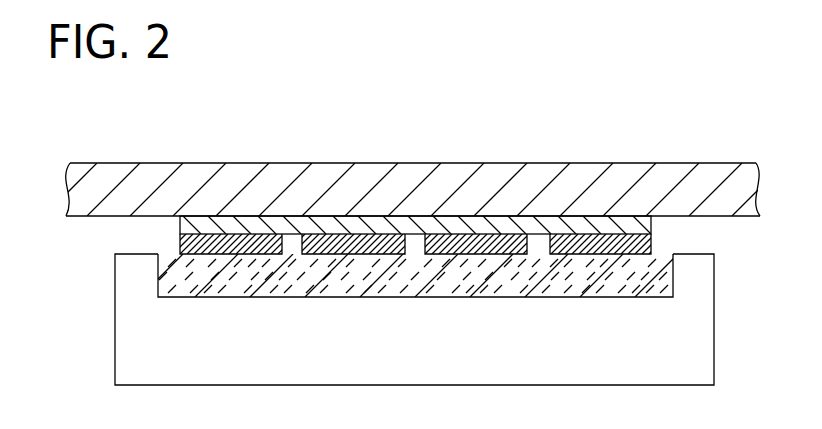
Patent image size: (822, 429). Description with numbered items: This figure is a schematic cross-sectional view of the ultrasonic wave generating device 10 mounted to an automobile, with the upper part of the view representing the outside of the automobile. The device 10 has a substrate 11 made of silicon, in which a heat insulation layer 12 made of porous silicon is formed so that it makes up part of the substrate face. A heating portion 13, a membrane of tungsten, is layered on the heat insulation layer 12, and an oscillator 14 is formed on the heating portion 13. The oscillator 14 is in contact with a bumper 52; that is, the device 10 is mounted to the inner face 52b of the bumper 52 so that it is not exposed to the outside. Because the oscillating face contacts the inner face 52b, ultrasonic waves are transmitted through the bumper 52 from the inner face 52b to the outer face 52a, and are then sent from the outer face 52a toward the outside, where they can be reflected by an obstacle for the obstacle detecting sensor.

The ultrasonic wave generating device 10 is at (454, 244).
The substrate 11 is at (698, 337).
The heat insulation layer 12 is at (512, 273).
The heating portion 13 is at (332, 246).
The oscillator 14 is at (230, 224).
The bumper 52 is at (423, 185).
The outer face 52a is at (601, 163).
The inner face 52b is at (102, 216).